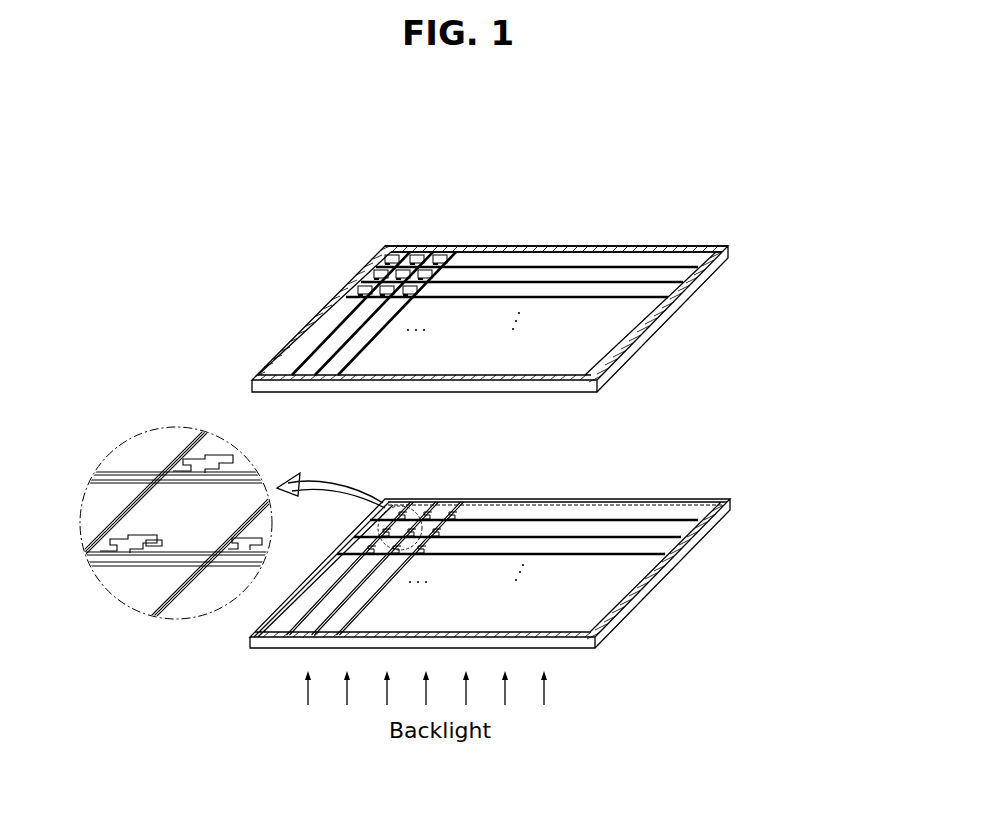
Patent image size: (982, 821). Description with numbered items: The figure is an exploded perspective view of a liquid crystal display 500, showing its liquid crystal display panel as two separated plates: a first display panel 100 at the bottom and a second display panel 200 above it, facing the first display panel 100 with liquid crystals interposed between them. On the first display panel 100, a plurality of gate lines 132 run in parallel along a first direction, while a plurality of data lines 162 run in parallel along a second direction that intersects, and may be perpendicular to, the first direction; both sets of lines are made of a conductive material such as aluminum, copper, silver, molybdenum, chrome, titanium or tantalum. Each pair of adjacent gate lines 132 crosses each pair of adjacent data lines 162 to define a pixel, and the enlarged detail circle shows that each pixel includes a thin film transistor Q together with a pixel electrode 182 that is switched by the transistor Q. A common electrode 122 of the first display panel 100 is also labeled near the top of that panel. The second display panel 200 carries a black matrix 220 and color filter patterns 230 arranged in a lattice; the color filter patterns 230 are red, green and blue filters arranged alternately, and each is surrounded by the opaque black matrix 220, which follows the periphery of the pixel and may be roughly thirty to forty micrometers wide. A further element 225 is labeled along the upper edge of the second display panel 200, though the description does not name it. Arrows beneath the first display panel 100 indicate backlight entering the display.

The liquid crystal display 500 is at (812, 237).
The second display panel 200 is at (706, 323).
The black matrix 220 is at (672, 267).
The light blocking frame 225 is at (620, 250).
The color filter patterns 230 is at (440, 254).
The first display panel 100 is at (696, 604).
The common electrode 122 is at (498, 503).
The data lines 162 is at (465, 500).
The pixel electrode 182 is at (448, 500).
The gate lines 132 is at (162, 556).
The thin film transistor Q is at (108, 553).